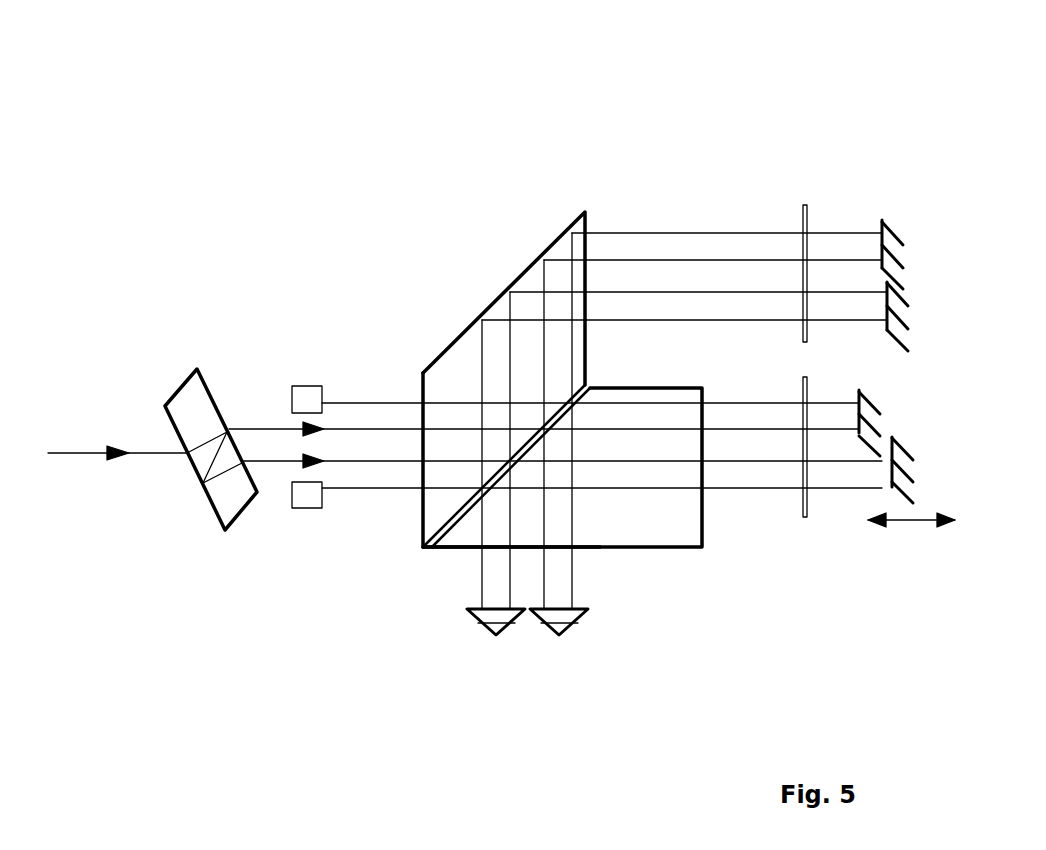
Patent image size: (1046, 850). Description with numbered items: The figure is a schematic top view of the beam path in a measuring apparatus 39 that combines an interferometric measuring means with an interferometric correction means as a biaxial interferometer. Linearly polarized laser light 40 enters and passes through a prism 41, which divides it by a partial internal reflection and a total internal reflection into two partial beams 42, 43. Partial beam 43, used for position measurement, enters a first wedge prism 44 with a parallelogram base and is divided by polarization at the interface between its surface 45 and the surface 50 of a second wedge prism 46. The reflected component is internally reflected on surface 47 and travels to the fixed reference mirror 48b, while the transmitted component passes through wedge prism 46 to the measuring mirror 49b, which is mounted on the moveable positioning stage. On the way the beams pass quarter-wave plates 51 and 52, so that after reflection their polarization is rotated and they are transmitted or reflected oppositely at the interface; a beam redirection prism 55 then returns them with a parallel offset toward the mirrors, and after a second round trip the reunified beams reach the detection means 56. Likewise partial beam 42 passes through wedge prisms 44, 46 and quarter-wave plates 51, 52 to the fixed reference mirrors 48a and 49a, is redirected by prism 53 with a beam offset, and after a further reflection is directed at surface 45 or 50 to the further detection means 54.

The measuring apparatus 39 is at (508, 152).
The laser light 40 is at (90, 450).
The prism 41 is at (193, 397).
The partial beam 42 is at (388, 428).
The partial beam 43 is at (378, 463).
The first wedge prism 44 is at (452, 375).
The surface 45 is at (455, 542).
The second wedge prism 46 is at (643, 515).
The surface 47 is at (525, 265).
The reference mirror 48a is at (882, 220).
The reference mirror 48b is at (890, 330).
The reference mirror 49a is at (860, 393).
The measuring mirror 49b is at (893, 488).
The surface 50 is at (438, 548).
The λ/4 plate 51 is at (806, 202).
The λ/4 plate 52 is at (803, 517).
The prism 53 is at (563, 635).
The detection means 54 is at (307, 398).
The prism 55 is at (492, 637).
The detection means 56 is at (308, 498).